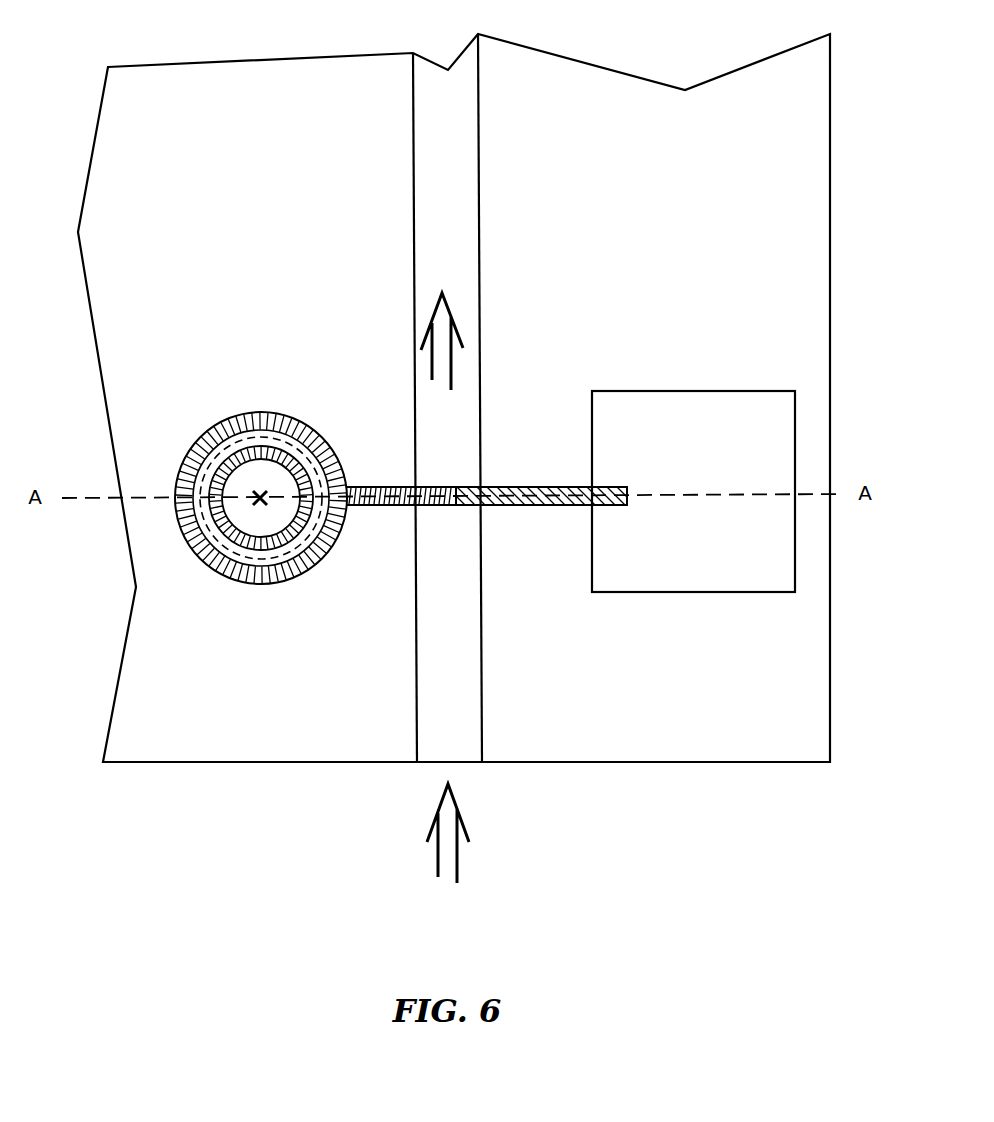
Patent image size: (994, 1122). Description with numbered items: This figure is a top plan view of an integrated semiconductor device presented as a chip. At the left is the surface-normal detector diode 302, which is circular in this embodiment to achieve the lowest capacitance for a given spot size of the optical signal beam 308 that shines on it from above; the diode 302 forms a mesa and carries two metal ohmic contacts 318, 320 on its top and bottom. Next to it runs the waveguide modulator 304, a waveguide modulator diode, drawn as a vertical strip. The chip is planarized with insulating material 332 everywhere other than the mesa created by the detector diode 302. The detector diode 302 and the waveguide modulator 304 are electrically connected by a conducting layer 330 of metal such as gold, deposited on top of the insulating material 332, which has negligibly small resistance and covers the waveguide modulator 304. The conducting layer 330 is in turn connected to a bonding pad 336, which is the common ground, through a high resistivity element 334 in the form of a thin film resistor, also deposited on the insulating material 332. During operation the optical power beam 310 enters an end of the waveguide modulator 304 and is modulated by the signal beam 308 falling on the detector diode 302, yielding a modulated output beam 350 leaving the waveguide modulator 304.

The detector diode 302 is at (242, 440).
The waveguide modulator 304 is at (482, 663).
The optical signal beam 308 is at (260, 507).
The optical power beam 310 is at (458, 862).
The metal ohmic contact 318 is at (280, 450).
The metal ohmic contact 320 is at (335, 450).
The conducting layer 330 is at (380, 506).
The insulating material 332 is at (216, 249).
The high resistivity element 334 is at (545, 487).
The bonding pad 336 is at (646, 444).
The modulated output beam 350 is at (455, 367).